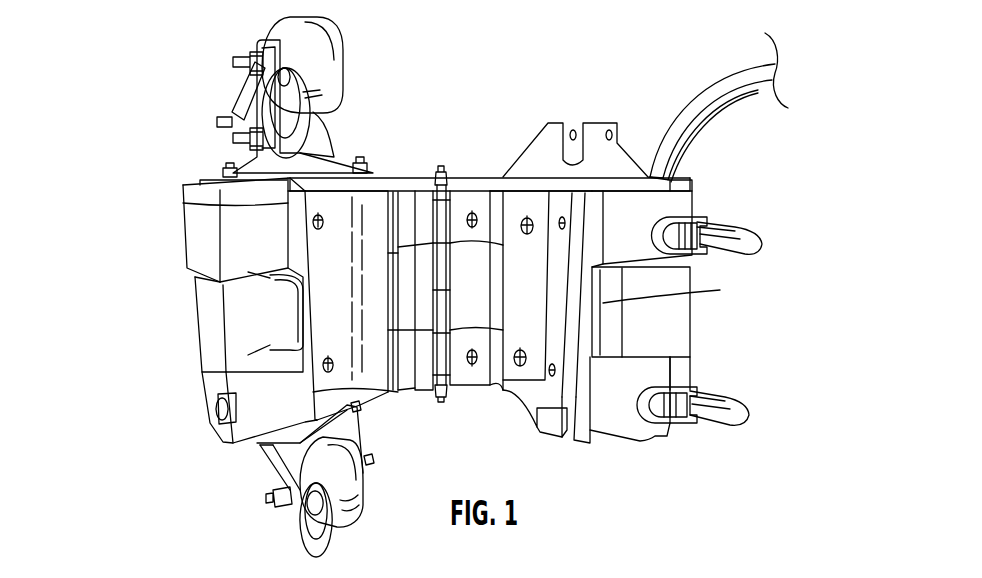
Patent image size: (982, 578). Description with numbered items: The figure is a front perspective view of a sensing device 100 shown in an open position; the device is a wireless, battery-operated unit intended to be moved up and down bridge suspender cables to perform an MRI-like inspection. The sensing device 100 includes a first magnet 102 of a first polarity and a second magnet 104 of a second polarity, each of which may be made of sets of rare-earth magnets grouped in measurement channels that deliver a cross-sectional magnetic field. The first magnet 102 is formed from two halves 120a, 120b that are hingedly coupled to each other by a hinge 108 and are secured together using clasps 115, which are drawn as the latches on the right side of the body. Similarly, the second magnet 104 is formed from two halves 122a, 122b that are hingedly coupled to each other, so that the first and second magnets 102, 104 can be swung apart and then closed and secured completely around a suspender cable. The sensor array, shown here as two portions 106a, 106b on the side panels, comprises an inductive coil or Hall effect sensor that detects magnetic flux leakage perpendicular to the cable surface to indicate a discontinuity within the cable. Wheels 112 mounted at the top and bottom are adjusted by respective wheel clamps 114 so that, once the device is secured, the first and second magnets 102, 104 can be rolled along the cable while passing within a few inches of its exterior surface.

The sensing device 100 is at (517, 72).
The first magnet 102 is at (133, 250).
The second magnet 104 is at (163, 433).
The sensor array half 106a is at (400, 297).
The sensor array half 106b is at (480, 292).
The hinge 108 is at (443, 172).
The wheel 112 is at (325, 38).
The wheel clamp 114 is at (258, 172).
The clasp 115 is at (745, 405).
The first half of first magnet 120a is at (290, 238).
The second half of first magnet 120b is at (617, 222).
The first half of second magnet 122a is at (303, 380).
The second half of second magnet 122b is at (620, 372).